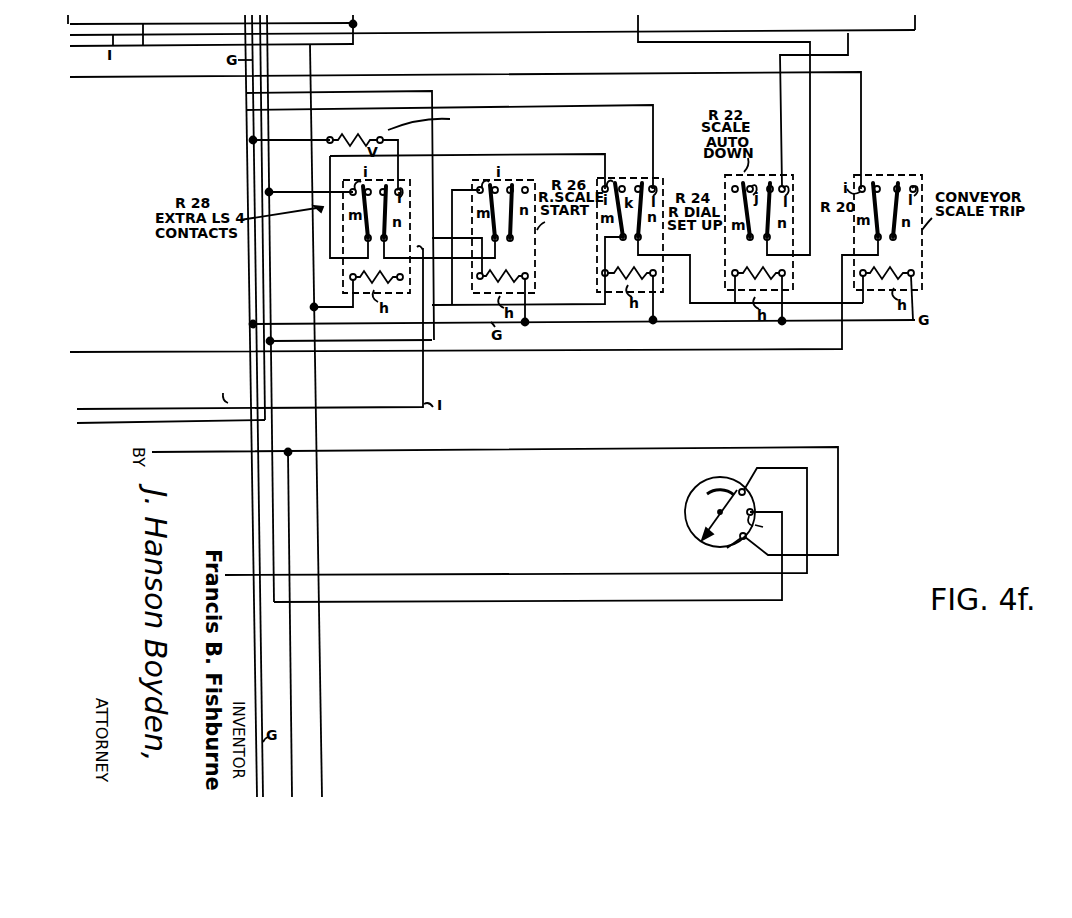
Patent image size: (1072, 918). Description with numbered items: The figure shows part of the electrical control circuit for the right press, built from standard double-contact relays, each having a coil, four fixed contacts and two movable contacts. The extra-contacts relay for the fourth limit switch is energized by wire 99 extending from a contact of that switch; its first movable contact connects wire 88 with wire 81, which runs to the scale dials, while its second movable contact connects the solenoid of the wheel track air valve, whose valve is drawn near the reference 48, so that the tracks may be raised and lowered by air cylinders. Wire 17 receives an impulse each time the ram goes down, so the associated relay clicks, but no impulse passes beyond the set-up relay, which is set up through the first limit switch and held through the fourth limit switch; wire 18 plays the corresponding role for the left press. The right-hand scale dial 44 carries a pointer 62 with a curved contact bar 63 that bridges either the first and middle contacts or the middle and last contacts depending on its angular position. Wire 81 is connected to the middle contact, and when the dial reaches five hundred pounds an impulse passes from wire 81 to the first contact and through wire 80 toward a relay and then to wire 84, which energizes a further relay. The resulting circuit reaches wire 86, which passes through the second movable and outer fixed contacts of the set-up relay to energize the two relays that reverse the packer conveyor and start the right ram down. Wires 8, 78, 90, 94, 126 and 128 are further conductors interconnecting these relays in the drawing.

The wire 8 is at (780, 55).
The wire 17 is at (245, 93).
The wire 18 is at (237, 422).
The scale dial 44 is at (692, 496).
The air valve for wheel track AV 2 48 is at (400, 142).
The pointer 62 is at (717, 519).
The curved contact bar 63 is at (718, 484).
The conductor 78 is at (834, 303).
The wire 80 is at (244, 565).
The wire 81 is at (98, 50).
The wire 84 is at (306, 446).
The wire 86 is at (246, 110).
The wire 88 is at (463, 214).
The conductor 90 is at (470, 188).
The conductor 94 is at (640, 45).
The wire 99 is at (329, 760).
The conductor 126 is at (114, 349).
The conductor 128 is at (112, 77).